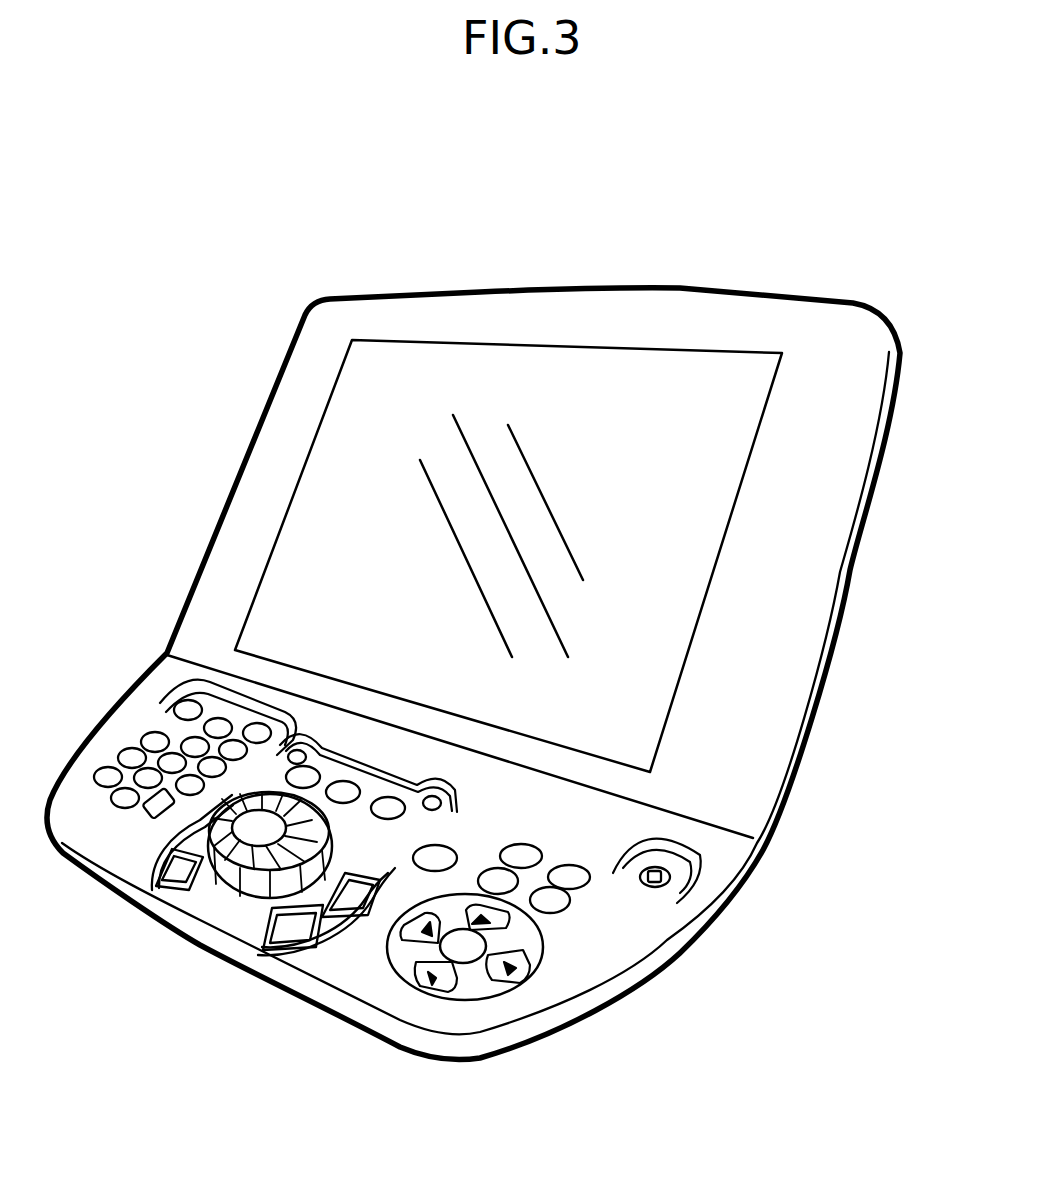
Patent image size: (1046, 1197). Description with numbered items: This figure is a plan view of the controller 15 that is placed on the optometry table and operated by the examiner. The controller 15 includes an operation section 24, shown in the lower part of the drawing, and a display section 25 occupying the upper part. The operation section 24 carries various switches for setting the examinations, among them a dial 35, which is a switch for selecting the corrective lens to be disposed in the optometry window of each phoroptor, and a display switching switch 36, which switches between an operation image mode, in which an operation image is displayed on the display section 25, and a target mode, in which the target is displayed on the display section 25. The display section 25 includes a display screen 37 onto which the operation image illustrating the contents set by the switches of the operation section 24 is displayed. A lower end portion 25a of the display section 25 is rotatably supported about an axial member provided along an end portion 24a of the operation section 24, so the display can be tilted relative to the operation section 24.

The controller 15 is at (547, 245).
The display screen 37 is at (675, 393).
The display section 25 is at (797, 593).
The lower end portion 25a is at (743, 805).
The operation section 24 is at (592, 960).
The end portion 24a is at (640, 817).
The display switching switch 36 is at (143, 813).
The dial 35 is at (238, 880).